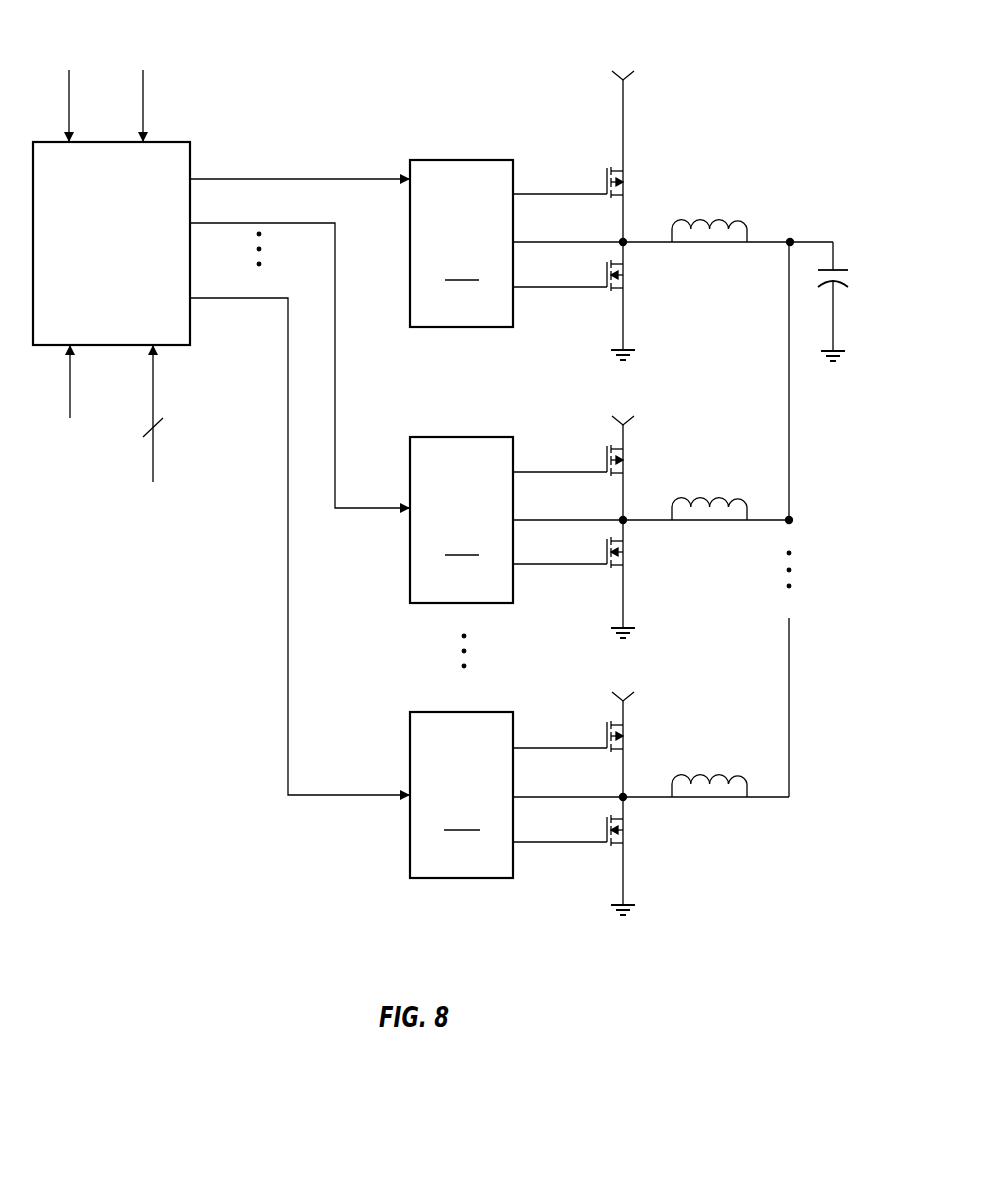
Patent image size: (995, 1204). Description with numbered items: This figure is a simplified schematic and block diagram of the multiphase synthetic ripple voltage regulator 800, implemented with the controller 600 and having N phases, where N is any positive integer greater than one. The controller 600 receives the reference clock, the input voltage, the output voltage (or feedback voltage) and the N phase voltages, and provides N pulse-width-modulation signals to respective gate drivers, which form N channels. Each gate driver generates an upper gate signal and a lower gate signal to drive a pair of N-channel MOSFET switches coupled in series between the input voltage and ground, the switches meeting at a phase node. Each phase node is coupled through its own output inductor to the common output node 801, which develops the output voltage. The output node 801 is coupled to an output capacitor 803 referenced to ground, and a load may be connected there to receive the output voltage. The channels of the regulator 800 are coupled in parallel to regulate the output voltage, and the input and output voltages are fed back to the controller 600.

The multiphase synthetic ripple voltage regulator 800 is at (764, 94).
The controller 600 is at (95, 267).
The common output node 801 is at (790, 240).
The output capacitor 803 is at (846, 284).